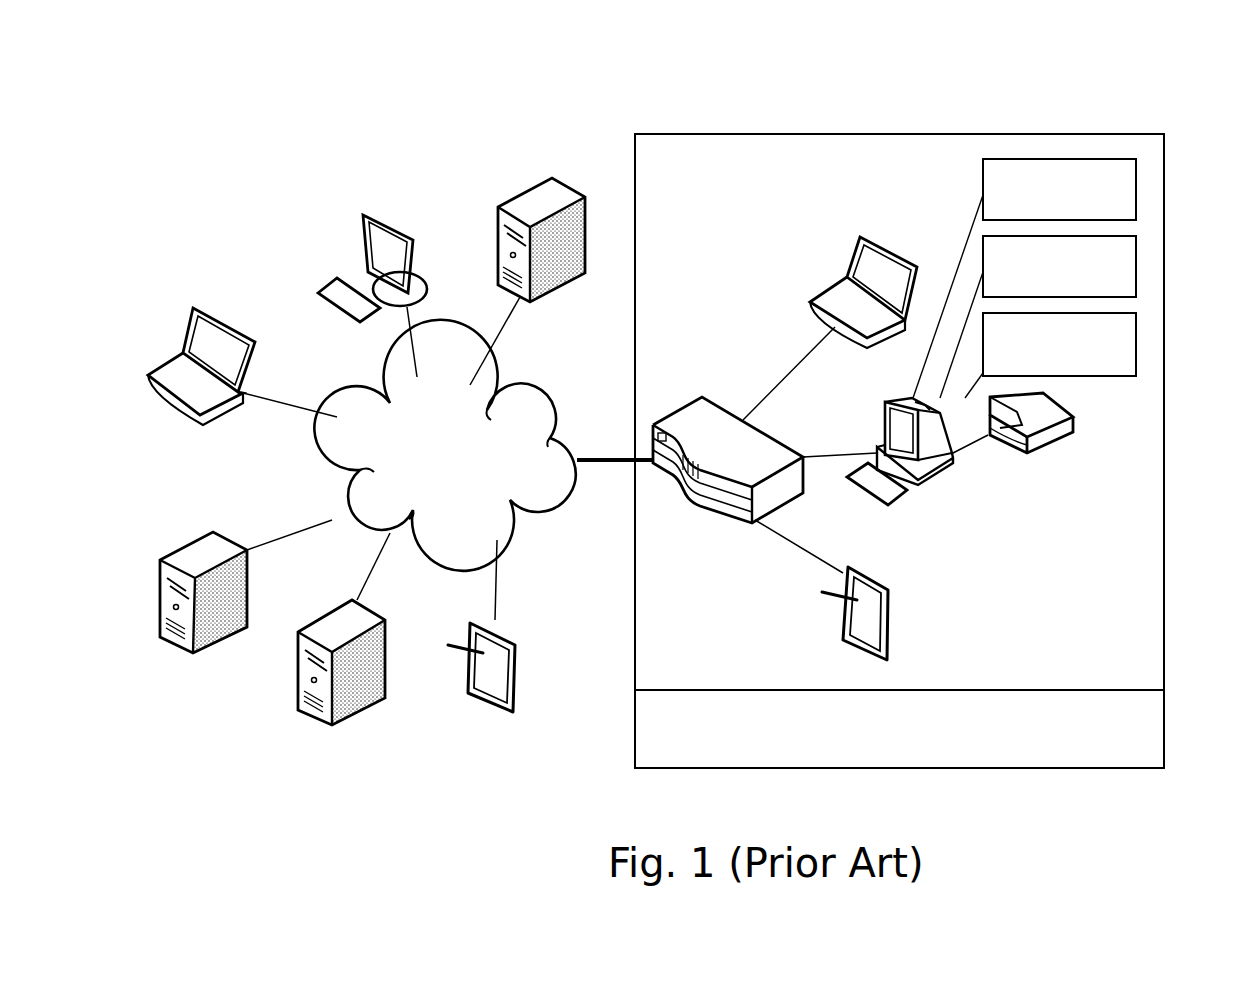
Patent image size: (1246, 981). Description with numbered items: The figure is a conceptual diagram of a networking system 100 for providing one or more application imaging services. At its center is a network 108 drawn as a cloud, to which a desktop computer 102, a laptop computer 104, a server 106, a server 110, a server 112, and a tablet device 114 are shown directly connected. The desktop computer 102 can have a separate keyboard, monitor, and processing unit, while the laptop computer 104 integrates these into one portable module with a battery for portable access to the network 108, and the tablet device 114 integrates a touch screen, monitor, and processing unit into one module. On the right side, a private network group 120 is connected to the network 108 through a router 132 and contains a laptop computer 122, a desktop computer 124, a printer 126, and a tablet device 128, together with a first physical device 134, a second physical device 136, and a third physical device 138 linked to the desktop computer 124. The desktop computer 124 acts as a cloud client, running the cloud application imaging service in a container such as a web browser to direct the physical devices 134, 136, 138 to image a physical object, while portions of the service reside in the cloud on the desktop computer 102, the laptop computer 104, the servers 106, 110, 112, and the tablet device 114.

The networking system 100 is at (1153, 128).
The desktop computer 102 is at (363, 212).
The laptop computer 104 is at (192, 305).
The server 106 is at (192, 541).
The network 108 is at (444, 445).
The server 110 is at (330, 611).
The server 112 is at (528, 190).
The tablet device 114 is at (513, 718).
The private network group 120 is at (899, 451).
The laptop computer 122 is at (816, 296).
The desktop computer 124 is at (923, 487).
The printer 126 is at (1075, 430).
The tablet device 128 is at (888, 617).
The router 132 is at (720, 513).
The first physical device 134 is at (1024, 278).
The second physical device 136 is at (1038, 317).
The third physical device 138 is at (1050, 355).